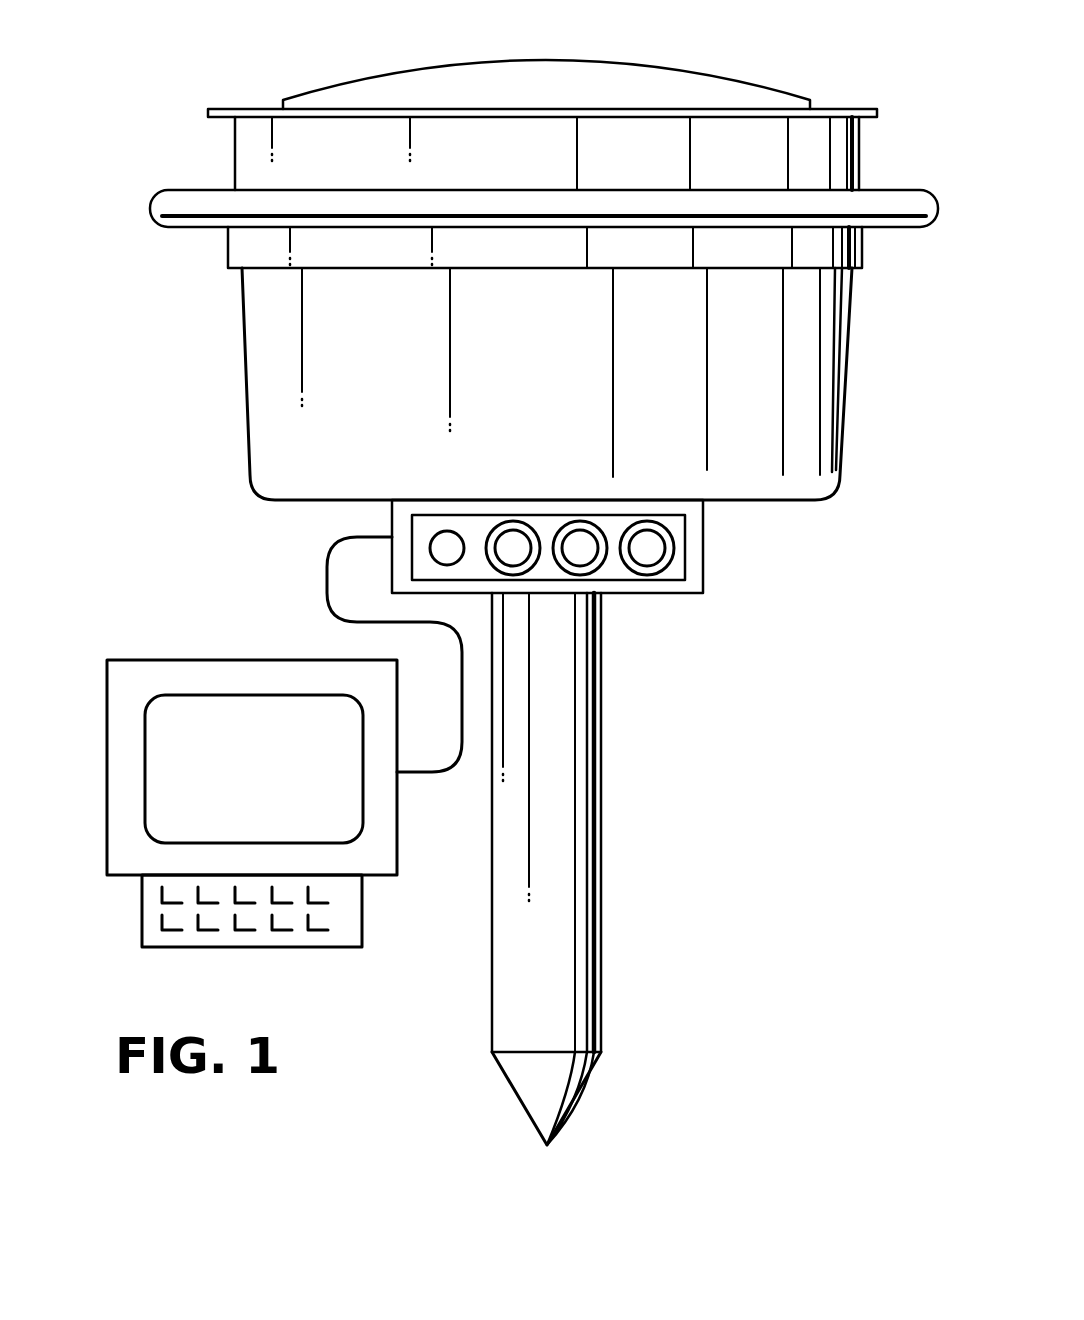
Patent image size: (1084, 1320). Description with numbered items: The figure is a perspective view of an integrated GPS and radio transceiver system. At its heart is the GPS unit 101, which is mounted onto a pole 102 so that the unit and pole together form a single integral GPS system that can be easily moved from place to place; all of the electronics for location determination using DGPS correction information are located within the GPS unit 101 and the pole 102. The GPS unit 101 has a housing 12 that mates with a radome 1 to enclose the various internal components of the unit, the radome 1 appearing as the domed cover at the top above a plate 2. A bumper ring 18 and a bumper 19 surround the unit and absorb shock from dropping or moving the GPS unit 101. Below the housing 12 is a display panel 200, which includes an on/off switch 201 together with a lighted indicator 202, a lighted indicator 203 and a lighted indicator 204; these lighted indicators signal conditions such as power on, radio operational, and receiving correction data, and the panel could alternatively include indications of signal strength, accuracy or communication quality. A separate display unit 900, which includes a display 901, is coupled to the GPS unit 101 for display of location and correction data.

The GPS unit 101 is at (694, 51).
The radome 1 is at (388, 78).
The top plate 2 is at (263, 108).
The bumper ring 18 is at (865, 153).
The bumper 19 is at (926, 208).
The housing 12 is at (553, 348).
The display panel 200 is at (675, 527).
The on/off switch 201 is at (446, 546).
The lighted indicator 202 is at (516, 545).
The lighted indicator 203 is at (583, 545).
The lighted indicator 204 is at (648, 545).
The pole 102 is at (603, 815).
The display unit 900 is at (235, 660).
The display 901 is at (290, 782).